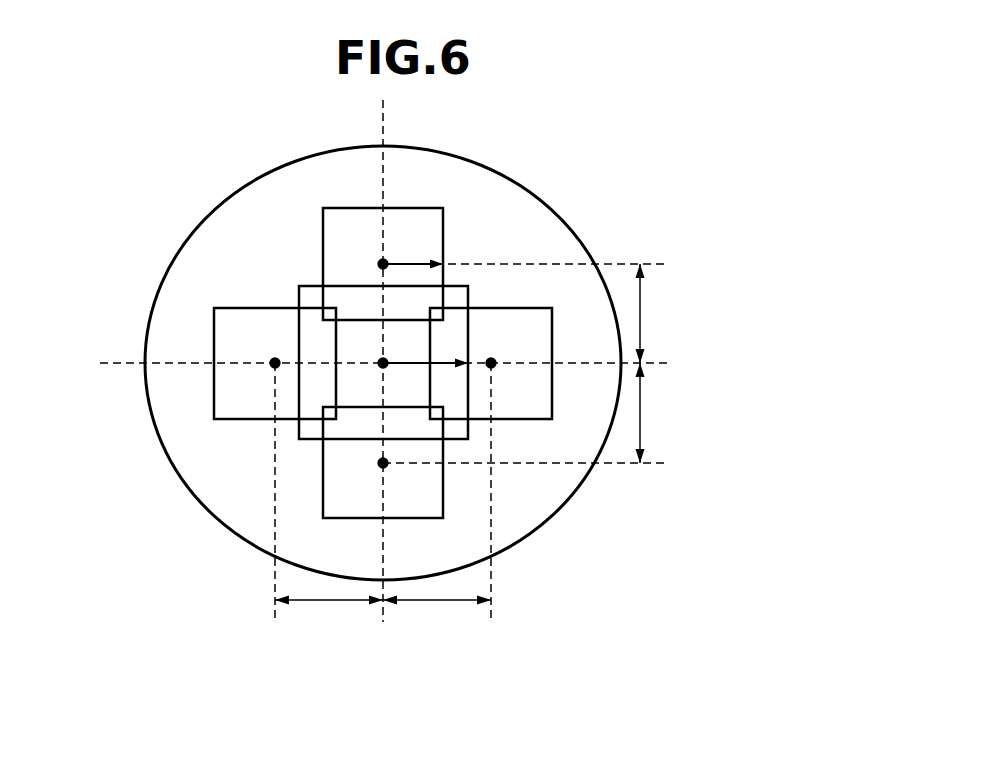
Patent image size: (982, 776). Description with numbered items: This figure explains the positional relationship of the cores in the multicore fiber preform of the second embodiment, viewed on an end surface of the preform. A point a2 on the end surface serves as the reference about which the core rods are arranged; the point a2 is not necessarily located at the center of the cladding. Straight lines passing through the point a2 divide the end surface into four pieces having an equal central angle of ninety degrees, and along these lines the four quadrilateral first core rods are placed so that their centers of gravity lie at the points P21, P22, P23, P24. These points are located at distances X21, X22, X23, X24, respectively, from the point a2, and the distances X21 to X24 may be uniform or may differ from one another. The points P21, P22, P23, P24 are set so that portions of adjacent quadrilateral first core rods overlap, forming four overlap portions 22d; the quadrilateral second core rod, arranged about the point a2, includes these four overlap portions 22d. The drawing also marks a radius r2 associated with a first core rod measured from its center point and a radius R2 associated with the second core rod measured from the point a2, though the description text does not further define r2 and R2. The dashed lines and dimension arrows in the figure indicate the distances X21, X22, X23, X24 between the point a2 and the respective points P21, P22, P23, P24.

The overlap portion 22d is at (437, 313).
The point P21 is at (383, 264).
The point P22 is at (491, 363).
The point P23 is at (383, 463).
The point P24 is at (275, 363).
The point a2 is at (383, 363).
The radius of outer rectangular region r2 is at (408, 263).
The radius of inner rectangular region R2 is at (407, 363).
The distance X21 is at (642, 312).
The distance X22 is at (437, 601).
The distance X23 is at (642, 410).
The distance X24 is at (330, 601).